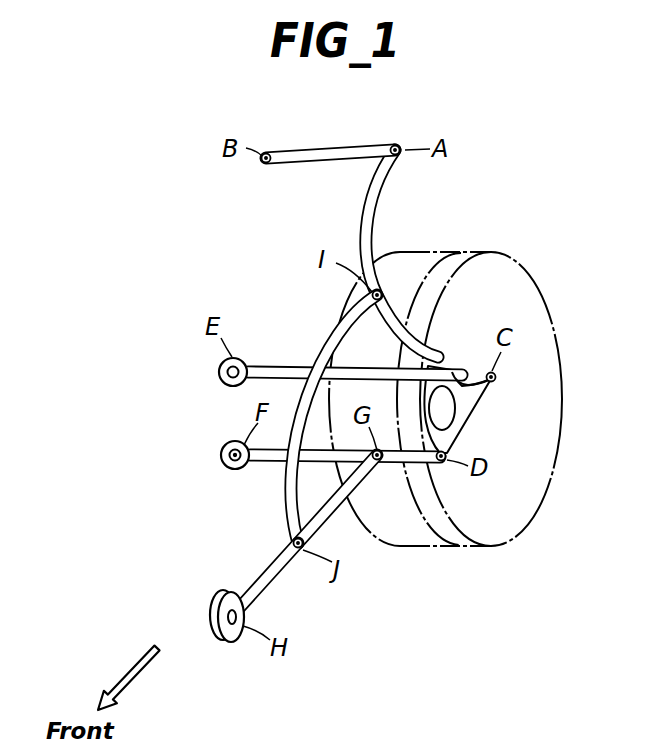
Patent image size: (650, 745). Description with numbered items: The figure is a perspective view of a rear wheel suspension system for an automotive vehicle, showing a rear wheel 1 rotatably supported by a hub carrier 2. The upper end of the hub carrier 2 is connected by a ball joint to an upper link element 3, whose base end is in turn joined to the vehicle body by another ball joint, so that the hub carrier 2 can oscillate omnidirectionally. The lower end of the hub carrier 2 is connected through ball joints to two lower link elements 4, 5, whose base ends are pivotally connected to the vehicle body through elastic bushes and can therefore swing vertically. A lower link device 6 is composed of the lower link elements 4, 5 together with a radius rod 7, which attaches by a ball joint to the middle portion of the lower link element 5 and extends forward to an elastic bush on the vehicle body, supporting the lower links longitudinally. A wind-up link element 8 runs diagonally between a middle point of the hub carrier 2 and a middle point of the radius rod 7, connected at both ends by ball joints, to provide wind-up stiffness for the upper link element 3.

The rear wheel 1 is at (563, 348).
The hub carrier 2 is at (374, 213).
The upper link element 3 is at (342, 150).
The lower link element 4 is at (265, 378).
The lower link element 5 is at (262, 463).
The lower link device 6 is at (136, 423).
The radius rod 7 is at (258, 582).
The wind-up link element 8 is at (324, 348).